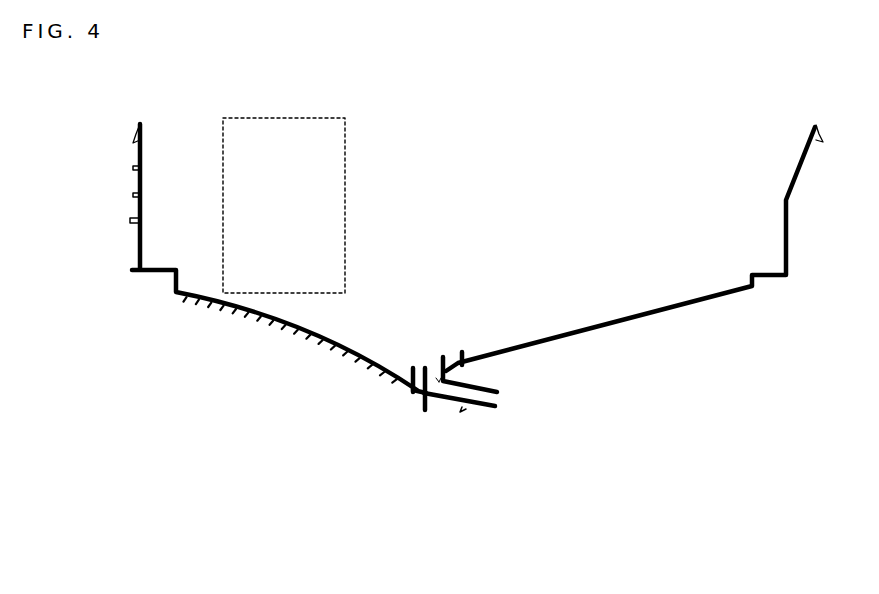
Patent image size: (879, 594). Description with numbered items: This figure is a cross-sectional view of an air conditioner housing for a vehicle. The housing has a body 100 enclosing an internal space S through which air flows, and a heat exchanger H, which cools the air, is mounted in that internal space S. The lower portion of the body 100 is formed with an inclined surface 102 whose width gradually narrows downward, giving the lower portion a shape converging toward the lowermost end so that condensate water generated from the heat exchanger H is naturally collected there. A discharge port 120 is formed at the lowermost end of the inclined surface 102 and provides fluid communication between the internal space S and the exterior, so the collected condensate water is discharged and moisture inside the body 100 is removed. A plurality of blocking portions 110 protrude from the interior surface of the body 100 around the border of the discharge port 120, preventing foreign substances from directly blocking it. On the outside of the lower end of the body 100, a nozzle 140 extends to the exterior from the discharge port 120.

The body 100 is at (656, 316).
The inclined surface 102 is at (550, 340).
The blocking portions 110 is at (412, 365).
The discharge port 120 is at (416, 397).
The nozzle 140 is at (477, 405).
The internal space S is at (173, 237).
The heat exchanger H is at (275, 293).